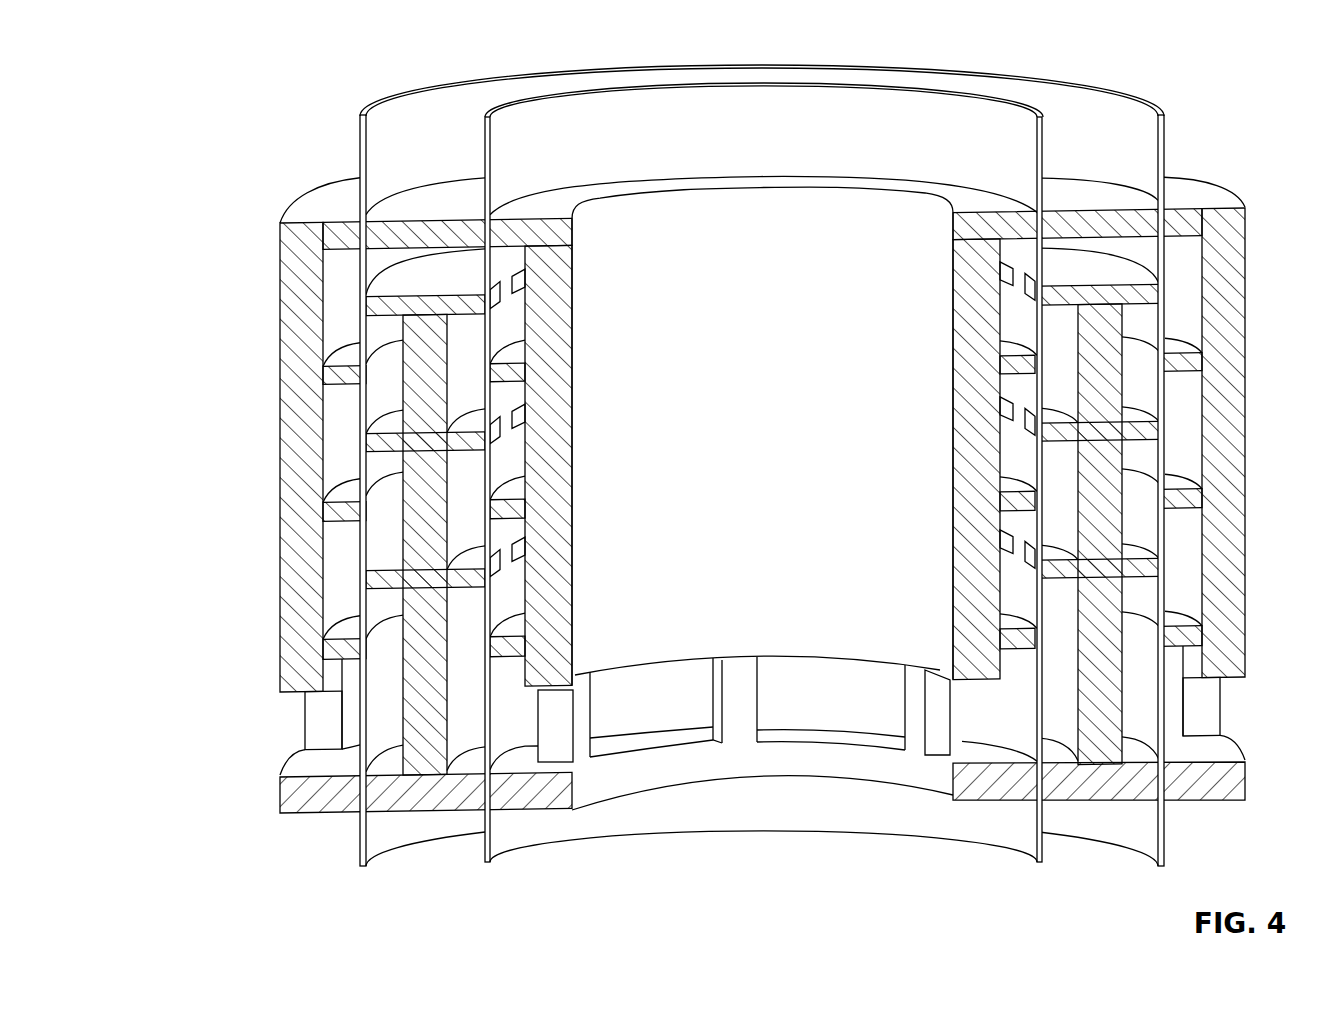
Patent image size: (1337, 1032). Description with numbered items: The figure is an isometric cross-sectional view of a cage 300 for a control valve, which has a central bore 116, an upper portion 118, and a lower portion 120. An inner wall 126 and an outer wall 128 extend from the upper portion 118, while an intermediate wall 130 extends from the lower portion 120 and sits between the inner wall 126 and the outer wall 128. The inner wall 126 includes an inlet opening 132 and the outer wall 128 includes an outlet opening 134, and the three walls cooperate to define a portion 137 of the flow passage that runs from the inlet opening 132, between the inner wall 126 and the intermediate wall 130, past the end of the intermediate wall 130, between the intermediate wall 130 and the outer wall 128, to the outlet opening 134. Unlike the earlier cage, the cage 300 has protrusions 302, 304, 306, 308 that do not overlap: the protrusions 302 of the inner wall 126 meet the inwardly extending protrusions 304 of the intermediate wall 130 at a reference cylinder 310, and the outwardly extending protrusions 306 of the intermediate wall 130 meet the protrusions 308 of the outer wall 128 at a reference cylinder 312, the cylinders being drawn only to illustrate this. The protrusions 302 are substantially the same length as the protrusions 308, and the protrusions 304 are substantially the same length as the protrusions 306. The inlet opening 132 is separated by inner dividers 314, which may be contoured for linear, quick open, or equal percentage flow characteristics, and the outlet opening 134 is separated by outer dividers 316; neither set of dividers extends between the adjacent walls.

The cage 300 is at (276, 62).
The reference cylinder 312 is at (400, 132).
The reference cylinder 310 is at (713, 118).
The central bore 116 is at (820, 252).
The upper portion 118 is at (315, 238).
The portion of the flow passage 137 is at (335, 303).
The outer wall 128 is at (298, 443).
The protrusions 302 is at (515, 508).
The inwardly extending protrusions 304 is at (478, 583).
The outwardly extending protrusions 306 is at (378, 578).
The protrusions 308 is at (348, 650).
The outer dividers 316 is at (317, 733).
The lower portion 120 is at (290, 797).
The inner dividers 314 is at (563, 727).
The inlet opening 132 is at (832, 738).
The outlet opening 134 is at (1240, 775).
The intermediate wall 130 is at (1105, 686).
The inner wall 126 is at (1000, 484).